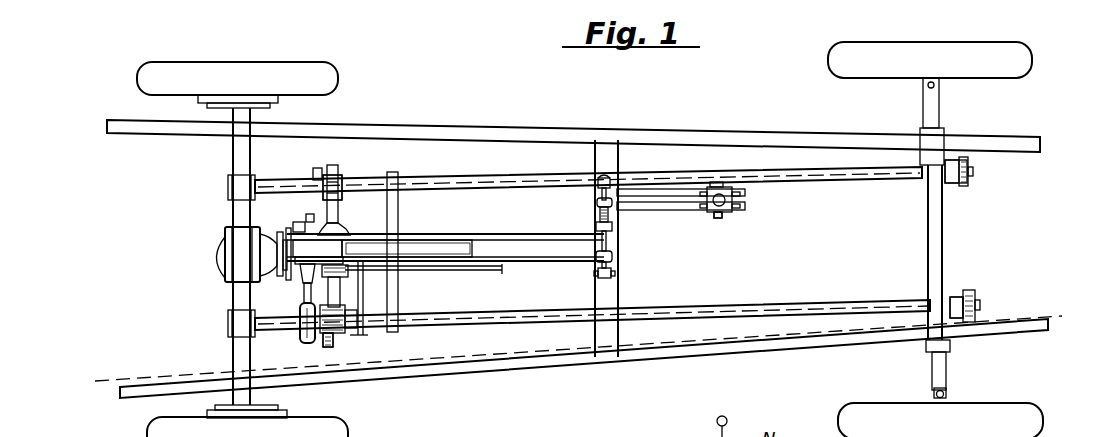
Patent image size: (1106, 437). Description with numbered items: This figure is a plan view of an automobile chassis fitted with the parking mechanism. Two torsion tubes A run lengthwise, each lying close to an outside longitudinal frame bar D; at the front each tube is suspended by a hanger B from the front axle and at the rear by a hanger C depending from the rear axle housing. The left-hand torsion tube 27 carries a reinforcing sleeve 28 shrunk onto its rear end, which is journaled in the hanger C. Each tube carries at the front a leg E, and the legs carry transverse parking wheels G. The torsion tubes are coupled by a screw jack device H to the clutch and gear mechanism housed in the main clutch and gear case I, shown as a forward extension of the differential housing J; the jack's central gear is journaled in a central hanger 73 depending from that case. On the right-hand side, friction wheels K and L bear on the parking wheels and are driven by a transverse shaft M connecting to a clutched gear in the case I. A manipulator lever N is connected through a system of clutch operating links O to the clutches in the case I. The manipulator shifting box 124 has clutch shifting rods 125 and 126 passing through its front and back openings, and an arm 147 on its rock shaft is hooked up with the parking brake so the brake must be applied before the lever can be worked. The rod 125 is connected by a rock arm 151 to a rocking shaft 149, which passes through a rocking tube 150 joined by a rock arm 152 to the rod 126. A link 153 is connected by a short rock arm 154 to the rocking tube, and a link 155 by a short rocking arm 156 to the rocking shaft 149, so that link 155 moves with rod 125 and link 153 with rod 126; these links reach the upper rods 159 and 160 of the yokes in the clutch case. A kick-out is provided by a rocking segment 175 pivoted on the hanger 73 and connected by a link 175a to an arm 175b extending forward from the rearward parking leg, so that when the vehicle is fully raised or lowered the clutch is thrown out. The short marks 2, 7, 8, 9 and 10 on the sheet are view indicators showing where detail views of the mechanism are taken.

The section line 2 is at (97, 384).
The vertical shaft 7 is at (352, 156).
The bracket 8 is at (308, 223).
The rear axle collar 9 is at (213, 325).
The front axle collar 10 is at (228, 188).
The torsion tube 27 is at (463, 182).
The reinforcing sleeve 28 is at (283, 219).
The central hanger 73 is at (347, 184).
The manipulator shifting box 124 is at (729, 217).
The clutch shifting rod 125 is at (641, 190).
The clutch shifting rod 126 is at (670, 212).
The arm 147 is at (715, 219).
The rocking shaft 149 is at (615, 270).
The rocking tube 150 is at (610, 220).
The rock arm 151 is at (597, 181).
The rock arm 152 is at (597, 208).
The link 153 is at (518, 232).
The short rock arm 154 is at (597, 226).
The link 155 is at (502, 263).
The short rocking arm 156 is at (612, 253).
The upper rod 159 is at (318, 250).
The upper rod 160 is at (382, 249).
The rocking segment 175 is at (370, 266).
The link 175a is at (350, 290).
The arm 175b is at (352, 338).
The torsion tubes A is at (794, 183).
The hanger B is at (921, 180).
The hanger C is at (215, 347).
The longitudinal frame bar D is at (456, 131).
The leg E is at (947, 178).
The transverse parking wheel G is at (328, 388).
The screw jack device H is at (343, 203).
The main clutch and gear case I is at (345, 231).
The differential housing J is at (233, 241).
The friction wheel K is at (974, 291).
The friction wheel L is at (312, 318).
The transverse shaft M is at (299, 300).
The manipulator lever N is at (740, 201).
The clutch operating links O is at (543, 264).